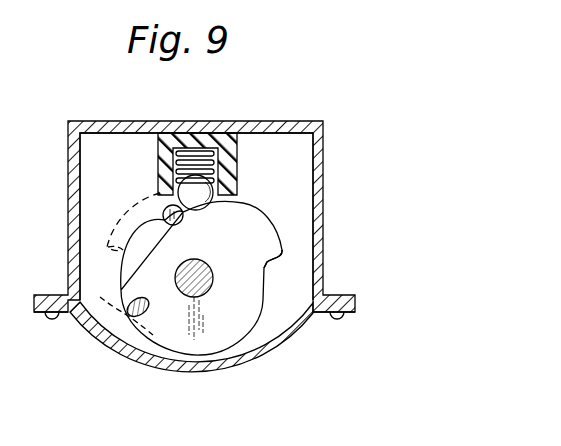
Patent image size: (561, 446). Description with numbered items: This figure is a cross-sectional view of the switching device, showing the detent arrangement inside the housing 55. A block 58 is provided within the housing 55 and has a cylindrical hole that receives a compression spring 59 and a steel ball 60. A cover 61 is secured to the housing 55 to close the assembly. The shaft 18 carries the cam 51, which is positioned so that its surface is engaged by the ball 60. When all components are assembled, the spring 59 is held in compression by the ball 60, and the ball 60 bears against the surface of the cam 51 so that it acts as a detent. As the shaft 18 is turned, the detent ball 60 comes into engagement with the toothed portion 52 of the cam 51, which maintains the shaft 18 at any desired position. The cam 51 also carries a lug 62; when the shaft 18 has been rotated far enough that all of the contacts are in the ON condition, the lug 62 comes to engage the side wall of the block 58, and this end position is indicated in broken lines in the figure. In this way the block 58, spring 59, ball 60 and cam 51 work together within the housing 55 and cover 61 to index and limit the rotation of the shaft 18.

The housing 55 is at (323, 174).
The cover 61 is at (247, 364).
The block 58 is at (160, 165).
The compression spring 59 is at (216, 163).
The steel ball 60 is at (238, 203).
The cam 51 is at (248, 312).
The lug 62 is at (272, 232).
The shaft 18 is at (213, 286).
The toothed portion 52 is at (120, 296).